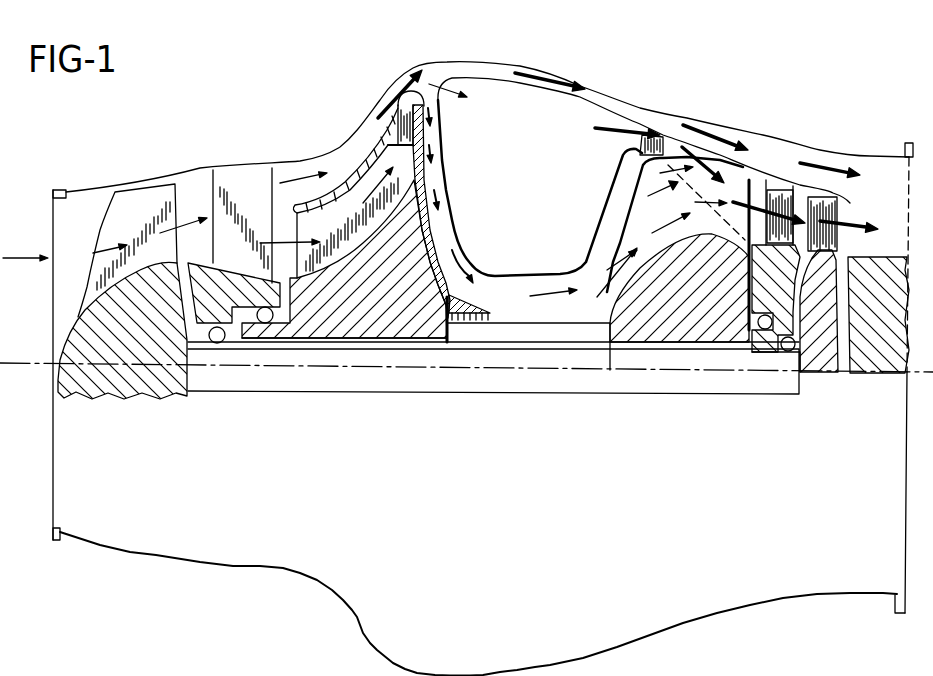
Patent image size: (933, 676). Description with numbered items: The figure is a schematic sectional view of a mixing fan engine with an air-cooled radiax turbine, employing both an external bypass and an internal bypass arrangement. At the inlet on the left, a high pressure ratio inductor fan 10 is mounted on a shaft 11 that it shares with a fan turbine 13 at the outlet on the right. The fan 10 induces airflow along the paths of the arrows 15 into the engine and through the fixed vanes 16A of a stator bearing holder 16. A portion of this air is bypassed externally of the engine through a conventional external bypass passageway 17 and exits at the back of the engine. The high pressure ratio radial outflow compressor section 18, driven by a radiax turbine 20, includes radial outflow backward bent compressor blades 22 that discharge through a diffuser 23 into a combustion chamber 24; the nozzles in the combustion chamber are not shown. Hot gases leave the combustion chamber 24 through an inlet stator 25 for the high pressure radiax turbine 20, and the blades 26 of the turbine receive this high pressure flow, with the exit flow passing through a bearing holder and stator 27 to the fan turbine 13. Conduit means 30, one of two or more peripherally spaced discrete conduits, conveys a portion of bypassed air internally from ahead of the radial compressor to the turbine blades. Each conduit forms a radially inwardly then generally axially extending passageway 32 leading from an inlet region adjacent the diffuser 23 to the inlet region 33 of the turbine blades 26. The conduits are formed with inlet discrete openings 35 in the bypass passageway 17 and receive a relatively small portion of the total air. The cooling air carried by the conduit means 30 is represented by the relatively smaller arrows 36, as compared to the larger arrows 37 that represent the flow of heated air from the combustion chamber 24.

The inductor fan 10 is at (135, 200).
The shaft 11 is at (300, 378).
The fan turbine 13 is at (833, 212).
The arrows 15 is at (67, 250).
The stator bearing holder 16 is at (207, 315).
The fixed vanes 16A is at (243, 182).
The external bypass passageway 17 is at (337, 163).
The radial outflow compressor section 18 is at (380, 323).
The radiax turbine 20 is at (700, 338).
The compressor blades 22 is at (312, 218).
The diffuser 23 is at (392, 128).
The combustion chamber 24 is at (547, 195).
The inlet stator 25 is at (665, 134).
The turbine blades 26 is at (743, 180).
The bearing holder and stator 27 is at (785, 195).
The conduit means 30 is at (447, 207).
The passageway 32 is at (533, 280).
The inlet region 33 is at (615, 268).
The inlet discrete openings 35 is at (417, 118).
The smaller arrows 36 is at (432, 90).
The larger arrows 37 is at (597, 137).